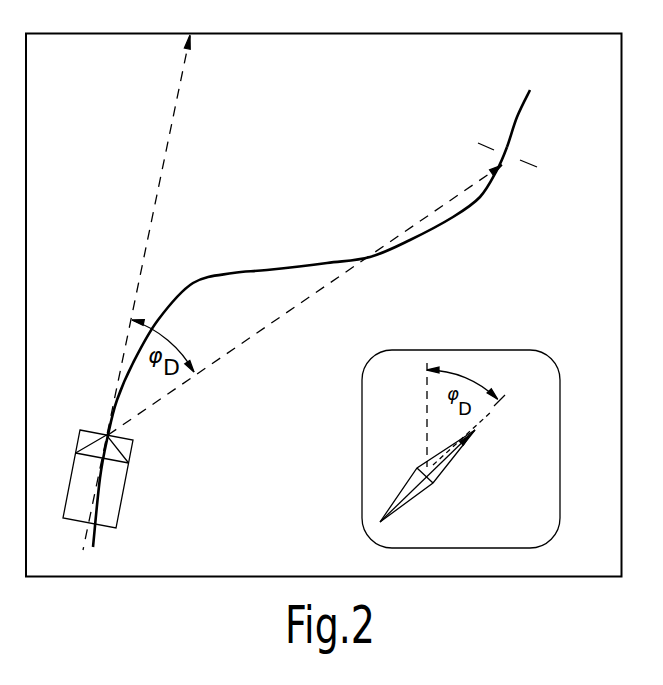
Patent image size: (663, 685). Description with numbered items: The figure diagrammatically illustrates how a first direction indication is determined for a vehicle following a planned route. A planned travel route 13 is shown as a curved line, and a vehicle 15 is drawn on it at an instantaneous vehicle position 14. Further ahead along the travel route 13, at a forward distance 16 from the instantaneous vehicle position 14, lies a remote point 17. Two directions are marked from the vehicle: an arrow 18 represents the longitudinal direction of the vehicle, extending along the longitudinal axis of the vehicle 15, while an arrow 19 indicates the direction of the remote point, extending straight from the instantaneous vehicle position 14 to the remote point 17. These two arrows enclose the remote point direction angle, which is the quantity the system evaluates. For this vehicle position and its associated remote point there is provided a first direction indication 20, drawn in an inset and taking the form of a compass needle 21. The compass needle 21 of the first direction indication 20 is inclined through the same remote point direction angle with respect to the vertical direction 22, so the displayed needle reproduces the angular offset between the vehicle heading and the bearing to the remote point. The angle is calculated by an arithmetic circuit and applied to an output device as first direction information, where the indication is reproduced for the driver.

The planned travel route 13 is at (530, 97).
The instantaneous vehicle position 14 is at (108, 432).
The vehicle 15 is at (112, 495).
The forward distance 16 is at (260, 275).
The remote point 17 is at (503, 157).
The arrow representing the longitudinal direction of the vehicle 18 is at (155, 202).
The arrow indicating the direction of the remote point 19 is at (273, 318).
The first direction indication 20 is at (553, 362).
The compass needle 21 is at (415, 493).
The vertical direction 22 is at (425, 402).